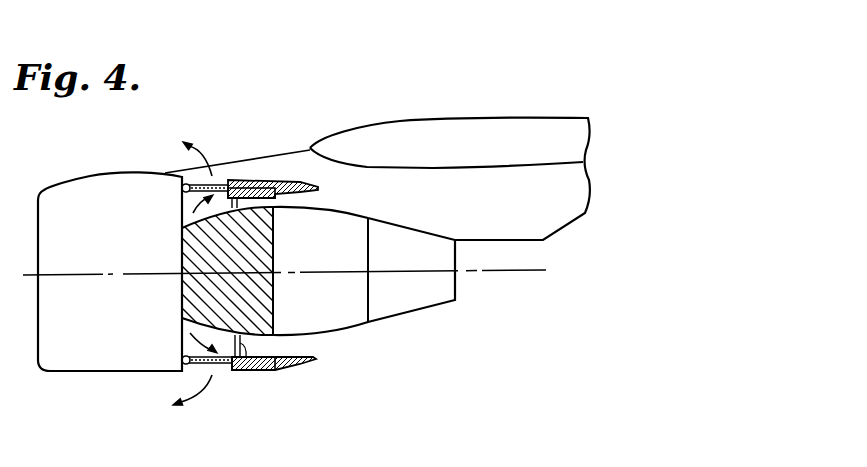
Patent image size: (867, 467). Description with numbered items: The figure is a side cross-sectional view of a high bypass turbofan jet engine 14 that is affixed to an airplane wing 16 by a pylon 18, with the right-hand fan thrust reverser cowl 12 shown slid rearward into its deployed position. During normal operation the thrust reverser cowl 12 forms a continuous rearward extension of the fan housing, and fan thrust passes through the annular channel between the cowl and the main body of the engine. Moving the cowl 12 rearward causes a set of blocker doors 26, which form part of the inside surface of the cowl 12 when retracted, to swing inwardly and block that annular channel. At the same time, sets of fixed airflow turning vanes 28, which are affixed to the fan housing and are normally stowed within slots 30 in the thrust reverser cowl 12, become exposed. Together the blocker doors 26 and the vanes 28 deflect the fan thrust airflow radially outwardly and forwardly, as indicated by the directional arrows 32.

The thrust reverser cowl 12 is at (273, 304).
The high bypass turbofan jet engine 14 is at (101, 163).
The airplane wing 16 is at (470, 110).
The pylon 18 is at (290, 162).
The blocker doors 26 is at (244, 368).
The fixed airflow turning vanes 28 is at (220, 366).
The slots 30 is at (268, 370).
The directional arrows 32 is at (200, 392).